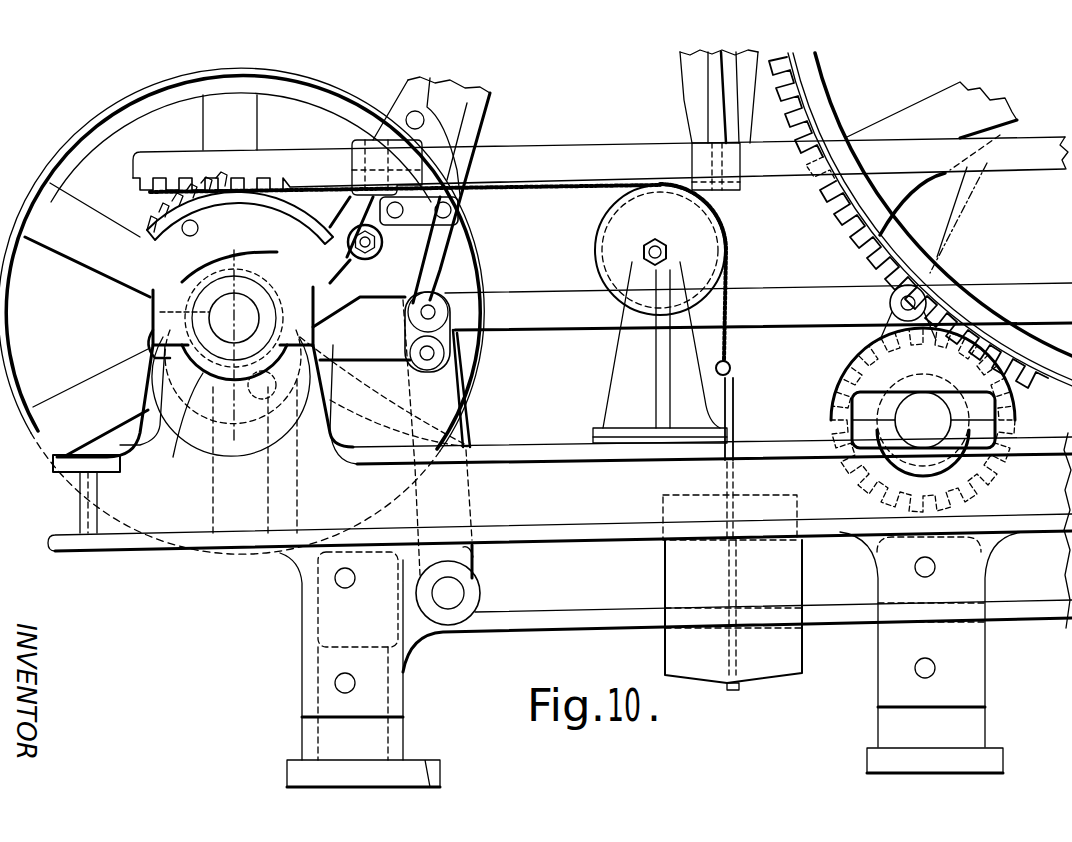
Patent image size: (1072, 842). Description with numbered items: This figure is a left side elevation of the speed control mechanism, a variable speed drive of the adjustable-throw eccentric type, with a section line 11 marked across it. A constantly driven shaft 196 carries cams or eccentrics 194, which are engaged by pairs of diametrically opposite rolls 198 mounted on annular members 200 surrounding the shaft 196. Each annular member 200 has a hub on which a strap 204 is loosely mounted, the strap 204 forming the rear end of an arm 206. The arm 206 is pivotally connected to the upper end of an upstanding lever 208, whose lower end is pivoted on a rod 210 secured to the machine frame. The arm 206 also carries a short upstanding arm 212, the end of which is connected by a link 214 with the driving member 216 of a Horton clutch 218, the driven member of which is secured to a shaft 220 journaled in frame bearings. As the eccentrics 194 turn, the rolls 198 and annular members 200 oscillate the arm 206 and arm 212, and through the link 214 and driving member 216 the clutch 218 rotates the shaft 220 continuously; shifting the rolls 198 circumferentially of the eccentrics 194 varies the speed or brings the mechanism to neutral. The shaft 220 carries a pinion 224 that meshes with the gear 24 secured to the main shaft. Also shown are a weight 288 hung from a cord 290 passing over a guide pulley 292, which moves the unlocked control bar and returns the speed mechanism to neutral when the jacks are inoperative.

The section line 11- 11 is at (410, 140).
The gear 24 is at (870, 247).
The cams or eccentrics 194 is at (167, 348).
The shaft 196 is at (220, 322).
The rolls 198 is at (150, 262).
The annular members 200 is at (157, 280).
The straps 204 is at (177, 414).
The arms 206 is at (350, 335).
The upstanding levers 208 is at (467, 405).
The rod 210 is at (448, 593).
The short upstanding arms 212 is at (410, 317).
The links 214 is at (518, 313).
The driving members 216 is at (1017, 407).
The Horton clutches 218 is at (950, 467).
The shaft 220 is at (917, 407).
The pinion 224 is at (873, 492).
The weight 288 is at (775, 667).
The cord 290 is at (520, 193).
The guide pulley 292 is at (692, 230).